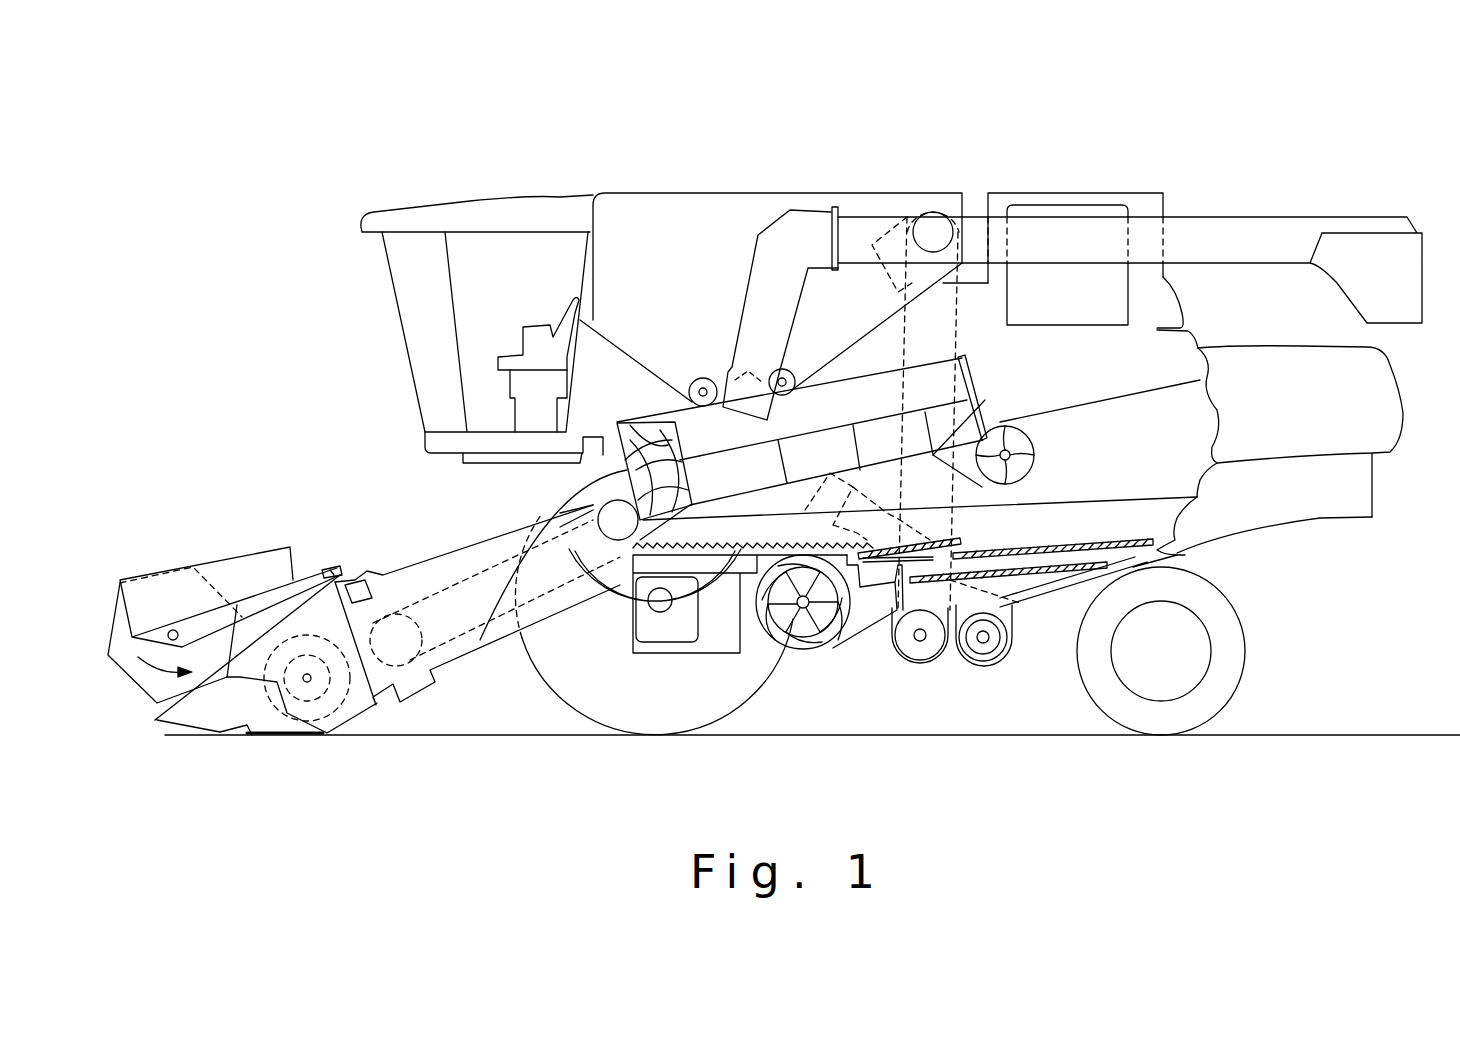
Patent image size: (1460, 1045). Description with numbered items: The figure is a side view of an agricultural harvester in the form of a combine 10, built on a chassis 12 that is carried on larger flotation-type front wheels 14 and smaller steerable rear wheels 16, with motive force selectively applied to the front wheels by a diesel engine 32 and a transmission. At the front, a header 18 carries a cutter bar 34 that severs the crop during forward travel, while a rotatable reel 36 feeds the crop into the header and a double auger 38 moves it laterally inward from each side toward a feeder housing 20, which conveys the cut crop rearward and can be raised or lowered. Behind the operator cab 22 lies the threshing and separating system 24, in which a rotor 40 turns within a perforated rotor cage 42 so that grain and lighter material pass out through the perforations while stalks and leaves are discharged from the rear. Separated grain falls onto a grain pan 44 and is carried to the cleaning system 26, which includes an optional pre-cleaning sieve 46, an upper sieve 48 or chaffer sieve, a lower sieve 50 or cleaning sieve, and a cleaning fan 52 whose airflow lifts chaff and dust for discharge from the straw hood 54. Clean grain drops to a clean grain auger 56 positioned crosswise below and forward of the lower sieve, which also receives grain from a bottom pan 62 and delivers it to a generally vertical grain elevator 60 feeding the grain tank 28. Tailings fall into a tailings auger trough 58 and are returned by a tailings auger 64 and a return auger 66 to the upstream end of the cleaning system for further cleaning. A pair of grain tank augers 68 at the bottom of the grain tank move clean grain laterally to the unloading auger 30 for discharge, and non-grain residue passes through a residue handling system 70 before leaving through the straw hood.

The combine 10 is at (467, 182).
The chassis 12 is at (1180, 557).
The front wheels 14 is at (557, 688).
The rear wheels 16 is at (1243, 670).
The header 18 is at (210, 549).
The feeder housing 20 is at (443, 553).
The operator cab 22 is at (400, 298).
The threshing and separating system 24 is at (557, 480).
The cleaning system 26 is at (877, 657).
The grain tank 28 is at (652, 198).
The unloading auger 30 is at (1265, 227).
The diesel engine 32 is at (1053, 203).
The cutter bar 34 is at (230, 733).
The rotatable reel 36 is at (115, 622).
The double auger 38 is at (308, 700).
The rotor 40 is at (653, 440).
The rotor cage 42 is at (845, 412).
The grain pan 44 is at (627, 572).
The pre-cleaning sieve 46 is at (960, 538).
The upper sieve 48 is at (1070, 540).
The lower sieve 50 is at (1040, 570).
The cleaning fan 52 is at (810, 628).
The straw hood 54 is at (1385, 393).
The clean grain auger 56 is at (927, 647).
The tailings auger trough 58 is at (1090, 583).
The grain elevator 60 is at (957, 332).
The bottom pan 62 is at (1068, 578).
The tailings auger 64 is at (983, 653).
The return auger 66 is at (890, 530).
The grain tank augers 68 is at (703, 377).
The residue handling system 70 is at (1330, 538).